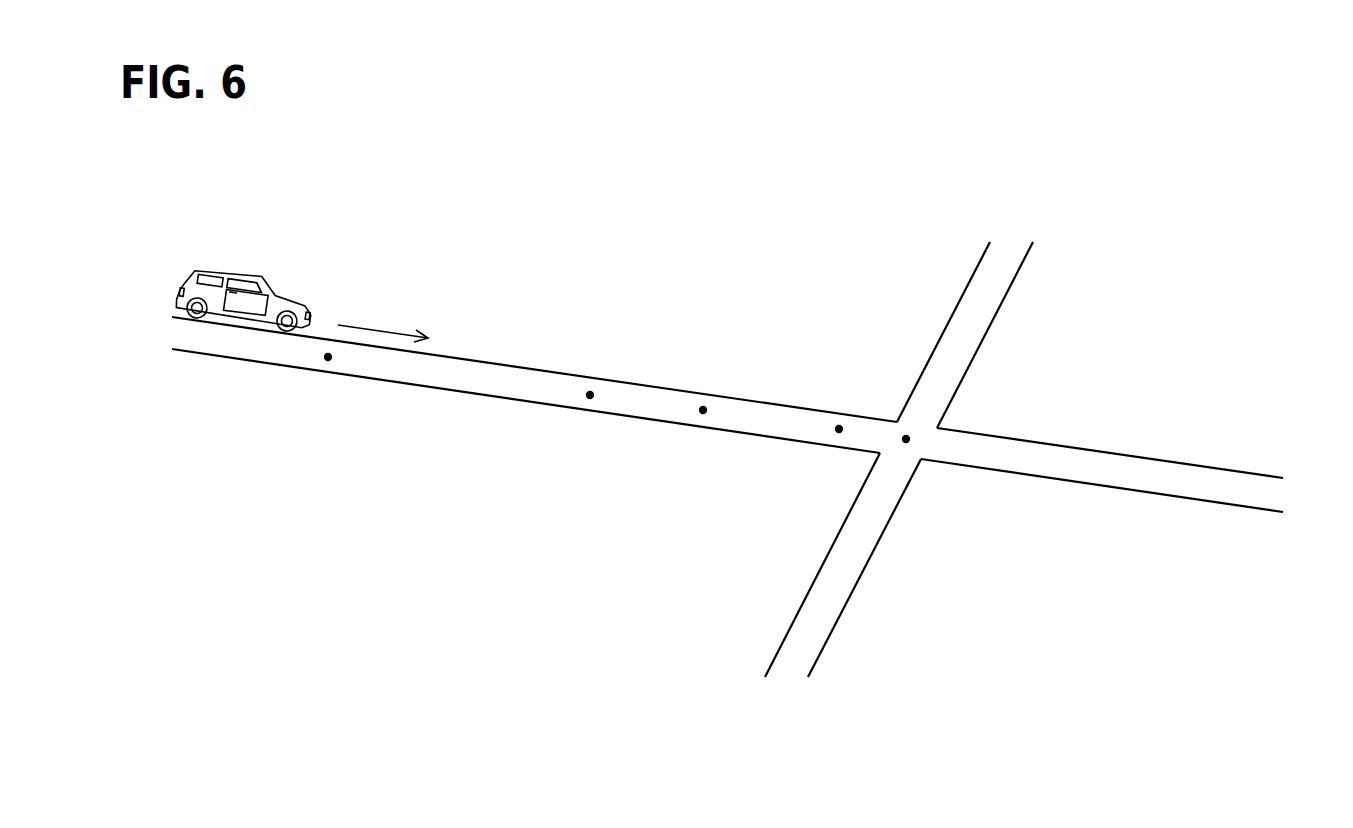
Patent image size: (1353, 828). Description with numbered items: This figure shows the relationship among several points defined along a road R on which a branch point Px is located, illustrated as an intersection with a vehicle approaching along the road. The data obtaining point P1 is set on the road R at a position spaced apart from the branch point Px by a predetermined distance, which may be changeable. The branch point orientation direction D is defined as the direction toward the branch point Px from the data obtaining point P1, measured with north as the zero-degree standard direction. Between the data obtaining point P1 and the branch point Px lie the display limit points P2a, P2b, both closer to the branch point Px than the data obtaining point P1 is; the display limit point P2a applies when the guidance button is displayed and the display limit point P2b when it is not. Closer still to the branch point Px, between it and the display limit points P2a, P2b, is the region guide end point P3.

The road R is at (470, 359).
The branch point orientation direction D is at (383, 324).
The data obtaining point P1 is at (325, 362).
The display limit point P2a is at (588, 399).
The display limit point P2b is at (701, 414).
The region guide end point P3 is at (836, 433).
The branch point Px is at (907, 443).